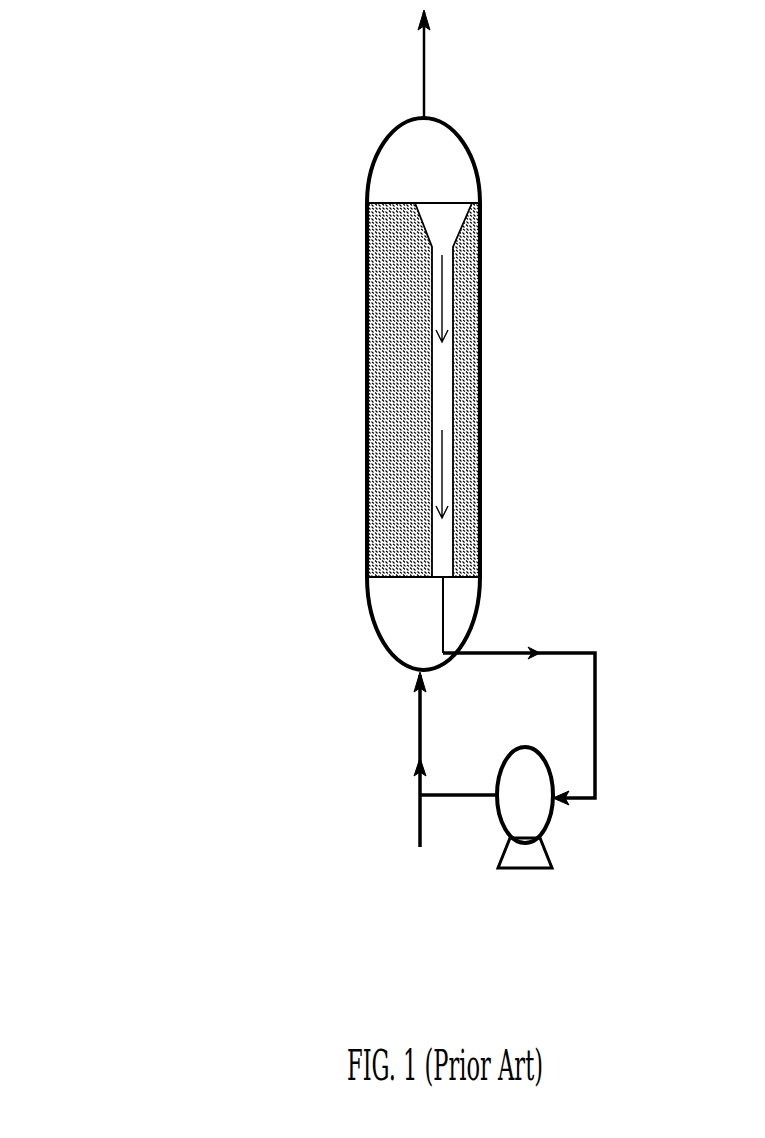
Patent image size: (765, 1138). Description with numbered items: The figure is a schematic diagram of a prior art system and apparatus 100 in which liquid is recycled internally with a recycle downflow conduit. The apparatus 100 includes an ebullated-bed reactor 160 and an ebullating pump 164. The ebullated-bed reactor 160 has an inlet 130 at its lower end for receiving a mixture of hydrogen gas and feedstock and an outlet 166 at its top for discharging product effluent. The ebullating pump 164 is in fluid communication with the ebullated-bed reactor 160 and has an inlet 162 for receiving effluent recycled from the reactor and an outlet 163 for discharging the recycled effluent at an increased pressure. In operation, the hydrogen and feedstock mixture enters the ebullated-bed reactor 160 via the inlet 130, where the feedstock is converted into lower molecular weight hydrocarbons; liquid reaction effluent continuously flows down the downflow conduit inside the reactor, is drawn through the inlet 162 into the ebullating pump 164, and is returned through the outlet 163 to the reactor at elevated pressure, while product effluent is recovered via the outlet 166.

The system and apparatus 100 is at (108, 121).
The inlet 130 is at (420, 742).
The ebullated-bed reactor 160 is at (367, 382).
The inlet 162 is at (573, 803).
The outlet 163 is at (472, 800).
The ebullating pump 164 is at (527, 868).
The outlet 166 is at (424, 88).